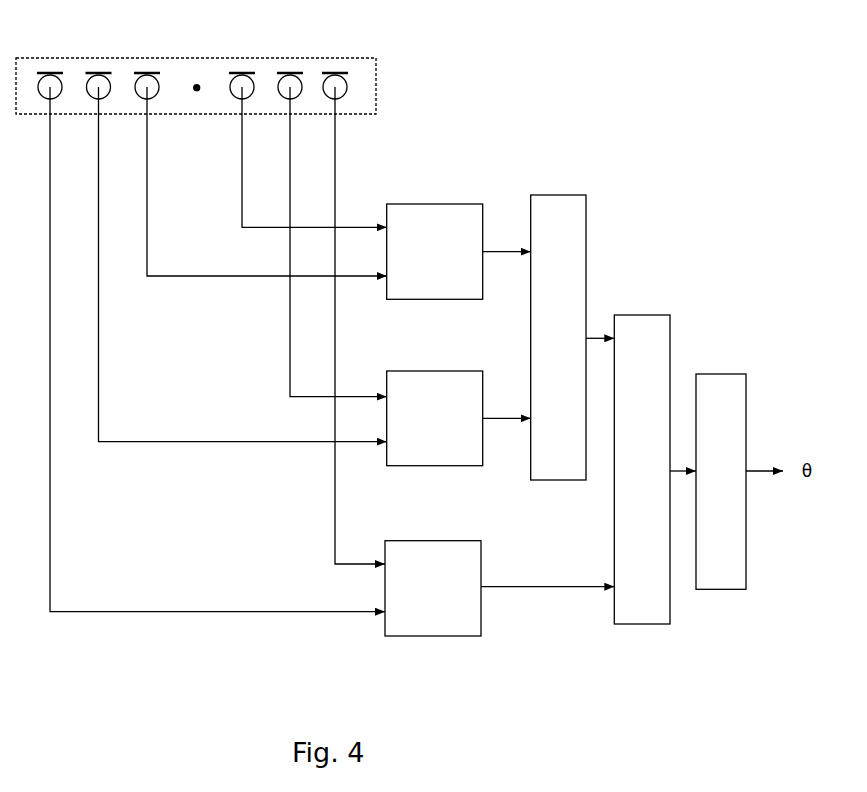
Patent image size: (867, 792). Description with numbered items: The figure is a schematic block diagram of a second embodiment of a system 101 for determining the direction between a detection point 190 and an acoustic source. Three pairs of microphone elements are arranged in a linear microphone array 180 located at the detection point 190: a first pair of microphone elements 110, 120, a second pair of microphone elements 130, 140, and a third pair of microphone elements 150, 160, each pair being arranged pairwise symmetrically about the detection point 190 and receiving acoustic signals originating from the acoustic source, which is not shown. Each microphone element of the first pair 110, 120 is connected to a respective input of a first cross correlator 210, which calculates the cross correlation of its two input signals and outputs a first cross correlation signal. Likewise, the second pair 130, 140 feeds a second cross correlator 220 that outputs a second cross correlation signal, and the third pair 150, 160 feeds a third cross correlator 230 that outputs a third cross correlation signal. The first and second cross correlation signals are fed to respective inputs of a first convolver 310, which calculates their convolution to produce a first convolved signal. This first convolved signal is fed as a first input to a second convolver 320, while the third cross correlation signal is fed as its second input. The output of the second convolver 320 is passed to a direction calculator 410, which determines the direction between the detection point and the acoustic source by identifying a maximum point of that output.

The system 101 is at (585, 97).
The microphone element 110 is at (142, 72).
The microphone element 120 is at (237, 72).
The microphone element 130 is at (94, 72).
The microphone element 140 is at (285, 72).
The microphone element 150 is at (45, 72).
The microphone element 160 is at (330, 72).
The linear microphone array 180 is at (376, 77).
The detection point 190 is at (196, 83).
The first cross correlator 210 is at (459, 251).
The second cross correlator 220 is at (459, 418).
The third cross correlator 230 is at (499, 588).
The first convolver 310 is at (573, 337).
The second convolver 320 is at (655, 469).
The direction calculator 410 is at (739, 481).